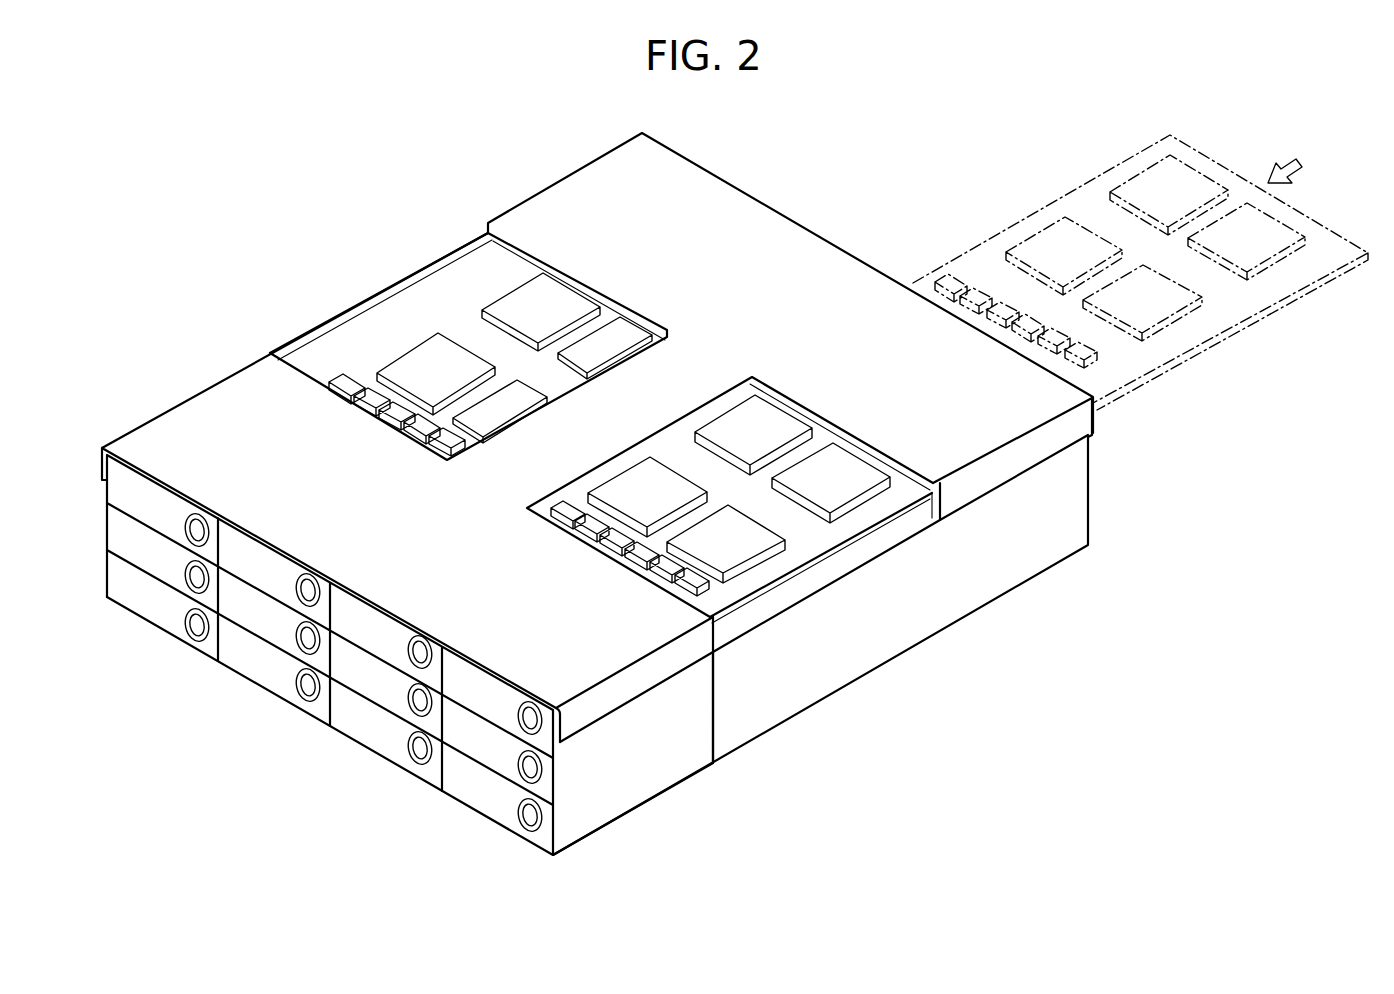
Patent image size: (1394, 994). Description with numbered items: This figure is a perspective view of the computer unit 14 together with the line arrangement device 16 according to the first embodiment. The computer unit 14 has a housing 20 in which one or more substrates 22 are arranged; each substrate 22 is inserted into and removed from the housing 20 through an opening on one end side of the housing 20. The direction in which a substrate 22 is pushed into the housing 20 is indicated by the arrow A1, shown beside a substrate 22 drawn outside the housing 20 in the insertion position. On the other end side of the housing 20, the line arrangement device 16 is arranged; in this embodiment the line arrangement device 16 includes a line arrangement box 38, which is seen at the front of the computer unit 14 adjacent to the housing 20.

The computer unit 14 is at (892, 686).
The line arrangement device 16 is at (632, 838).
The housing 20 is at (1020, 573).
The substrate 22 is at (430, 316).
The line arrangement box 38 is at (676, 776).
The arrow A1 is at (1284, 163).